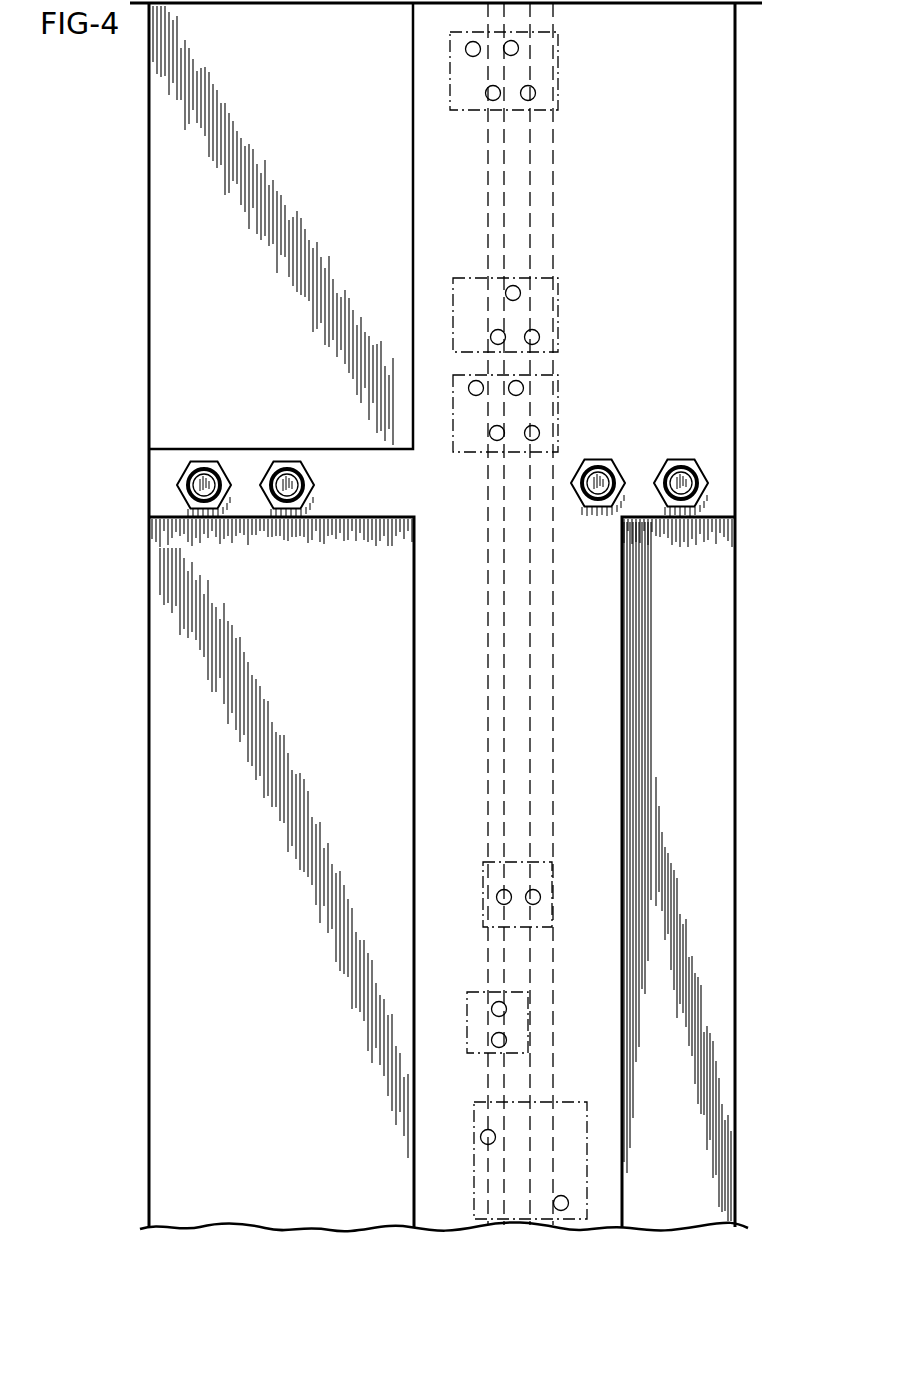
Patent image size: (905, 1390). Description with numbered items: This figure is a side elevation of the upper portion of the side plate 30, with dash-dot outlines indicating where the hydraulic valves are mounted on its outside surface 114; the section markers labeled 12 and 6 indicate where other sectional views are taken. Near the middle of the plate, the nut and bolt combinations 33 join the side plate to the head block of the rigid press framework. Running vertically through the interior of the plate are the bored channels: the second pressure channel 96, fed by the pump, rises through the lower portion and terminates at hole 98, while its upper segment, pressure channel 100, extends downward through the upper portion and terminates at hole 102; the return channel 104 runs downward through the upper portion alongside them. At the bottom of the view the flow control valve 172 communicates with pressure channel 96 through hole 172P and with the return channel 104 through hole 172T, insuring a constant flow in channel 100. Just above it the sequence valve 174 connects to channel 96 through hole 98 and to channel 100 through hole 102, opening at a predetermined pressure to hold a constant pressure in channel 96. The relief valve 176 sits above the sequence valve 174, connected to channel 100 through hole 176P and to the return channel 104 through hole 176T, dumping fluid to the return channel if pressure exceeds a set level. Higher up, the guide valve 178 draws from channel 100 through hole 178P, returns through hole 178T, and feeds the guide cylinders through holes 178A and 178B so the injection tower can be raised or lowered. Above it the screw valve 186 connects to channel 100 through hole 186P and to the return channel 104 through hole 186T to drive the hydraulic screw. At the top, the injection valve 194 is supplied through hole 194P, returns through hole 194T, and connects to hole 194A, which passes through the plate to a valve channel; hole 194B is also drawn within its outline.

The section line 12- 12 is at (130, 3).
The section line 6- 6 is at (441, 50).
The side plate 30 is at (728, 397).
The nut and bolt combinations 33 is at (270, 470).
The second pressure channel 96 is at (497, 1088).
The hole 98 is at (493, 1045).
The upper segment of the second pressure channel 100 is at (490, 583).
The hole 102 is at (493, 1005).
The return channel 104 is at (545, 682).
The outside surface 114 is at (660, 205).
The flow control valve 172 is at (567, 1100).
The hole 172P is at (483, 1140).
The hole 172T is at (569, 1203).
The sequence valve 174 is at (470, 1040).
The relief valve 176 is at (540, 858).
The hole 176P is at (496, 897).
The hole 176T is at (541, 897).
The guide valve 178 is at (560, 392).
The hole 178A is at (523, 386).
The hole 178B is at (468, 388).
The hole 178P is at (490, 437).
The hole 178T is at (540, 433).
The screw valve 186 is at (557, 290).
The hole 186P is at (490, 337).
The hole 186T is at (540, 337).
The injection valve 194 is at (560, 112).
The hole 194A is at (518, 47).
The hole 194B is at (466, 49).
The hole 194P is at (487, 99).
The hole 194T is at (536, 93).